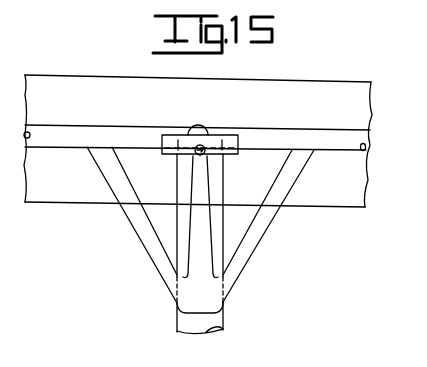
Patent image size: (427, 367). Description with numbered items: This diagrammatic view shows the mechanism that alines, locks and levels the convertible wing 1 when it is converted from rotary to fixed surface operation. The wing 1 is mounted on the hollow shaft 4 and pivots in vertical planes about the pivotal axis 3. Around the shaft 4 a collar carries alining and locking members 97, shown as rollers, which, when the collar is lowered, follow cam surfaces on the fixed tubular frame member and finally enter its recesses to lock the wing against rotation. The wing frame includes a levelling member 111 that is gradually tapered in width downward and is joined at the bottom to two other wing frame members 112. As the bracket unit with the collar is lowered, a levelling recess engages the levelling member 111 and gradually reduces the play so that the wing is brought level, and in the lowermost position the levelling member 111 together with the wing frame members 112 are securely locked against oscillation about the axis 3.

The convertible wing 1 is at (332, 82).
The pivotal axis 3 is at (195, 156).
The hollow shaft 4 is at (224, 311).
The alining and locking members 97 is at (201, 126).
The levelling member 111 is at (187, 223).
The wing frame members 112 is at (160, 259).